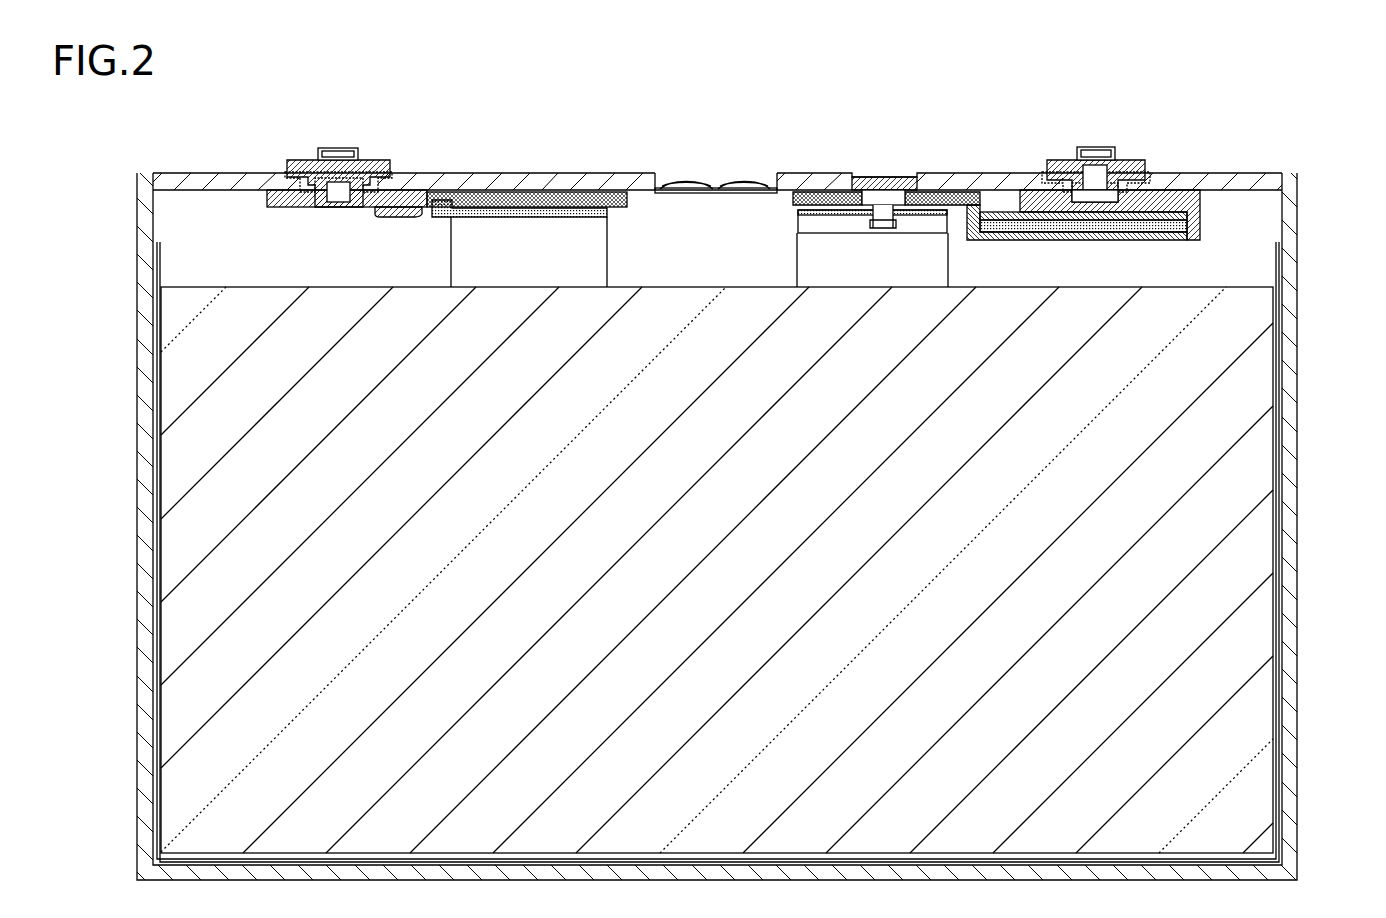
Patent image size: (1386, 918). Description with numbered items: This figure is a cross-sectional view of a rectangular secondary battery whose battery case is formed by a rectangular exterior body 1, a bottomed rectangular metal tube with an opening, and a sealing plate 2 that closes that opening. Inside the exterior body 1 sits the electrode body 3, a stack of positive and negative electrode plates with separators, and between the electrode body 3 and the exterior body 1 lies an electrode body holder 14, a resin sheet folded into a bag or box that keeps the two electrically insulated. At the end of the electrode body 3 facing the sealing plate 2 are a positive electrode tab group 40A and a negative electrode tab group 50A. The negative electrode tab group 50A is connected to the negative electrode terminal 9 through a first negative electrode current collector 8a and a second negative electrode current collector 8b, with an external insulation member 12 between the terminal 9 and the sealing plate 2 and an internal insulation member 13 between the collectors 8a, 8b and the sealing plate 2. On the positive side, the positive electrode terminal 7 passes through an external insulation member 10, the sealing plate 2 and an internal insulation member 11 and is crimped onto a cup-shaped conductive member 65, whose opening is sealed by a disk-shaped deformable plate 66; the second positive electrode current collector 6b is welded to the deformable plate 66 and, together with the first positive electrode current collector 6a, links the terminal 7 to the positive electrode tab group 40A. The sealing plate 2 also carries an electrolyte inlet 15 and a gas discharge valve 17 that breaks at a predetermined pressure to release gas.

The rectangular exterior body 1 is at (1297, 378).
The sealing plate 2 is at (1240, 173).
The electrode body 3 is at (1262, 679).
The electrode body holder 14 is at (157, 250).
The negative electrode terminal 9 is at (370, 160).
The external insulation member 12 is at (290, 170).
The first negative electrode current collector 8a is at (445, 203).
The second negative electrode current collector 8b is at (372, 207).
The internal insulation member 13 is at (540, 192).
The negative electrode tab group 50A is at (607, 258).
The positive electrode tab group 40A is at (797, 258).
The gas discharge valve 17 is at (690, 185).
The electrolyte inlet 15 is at (873, 162).
The internal insulation member 11 is at (935, 192).
The first positive electrode current collector 6a is at (955, 210).
The second positive electrode current collector 6b is at (1050, 216).
The conductive member 65 is at (1030, 176).
The positive electrode terminal 7 is at (1060, 165).
The external insulation member 10 is at (1192, 215).
The deformable plate 66 is at (1100, 226).